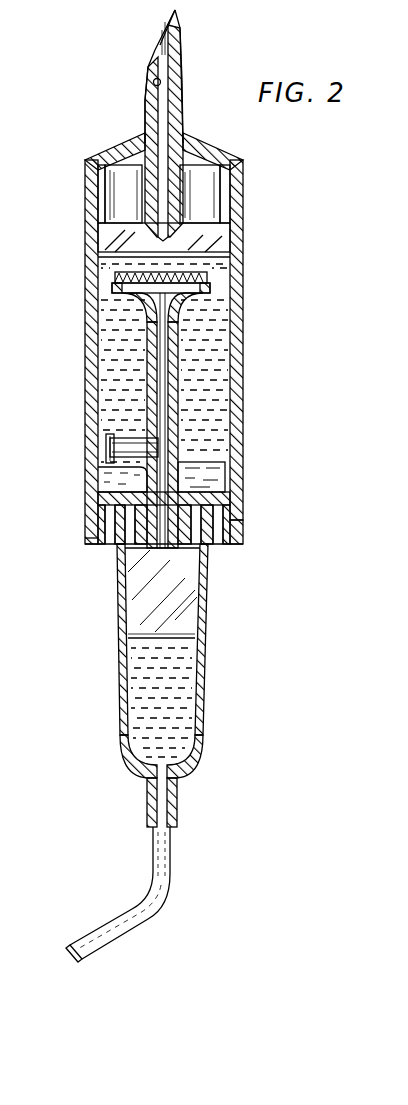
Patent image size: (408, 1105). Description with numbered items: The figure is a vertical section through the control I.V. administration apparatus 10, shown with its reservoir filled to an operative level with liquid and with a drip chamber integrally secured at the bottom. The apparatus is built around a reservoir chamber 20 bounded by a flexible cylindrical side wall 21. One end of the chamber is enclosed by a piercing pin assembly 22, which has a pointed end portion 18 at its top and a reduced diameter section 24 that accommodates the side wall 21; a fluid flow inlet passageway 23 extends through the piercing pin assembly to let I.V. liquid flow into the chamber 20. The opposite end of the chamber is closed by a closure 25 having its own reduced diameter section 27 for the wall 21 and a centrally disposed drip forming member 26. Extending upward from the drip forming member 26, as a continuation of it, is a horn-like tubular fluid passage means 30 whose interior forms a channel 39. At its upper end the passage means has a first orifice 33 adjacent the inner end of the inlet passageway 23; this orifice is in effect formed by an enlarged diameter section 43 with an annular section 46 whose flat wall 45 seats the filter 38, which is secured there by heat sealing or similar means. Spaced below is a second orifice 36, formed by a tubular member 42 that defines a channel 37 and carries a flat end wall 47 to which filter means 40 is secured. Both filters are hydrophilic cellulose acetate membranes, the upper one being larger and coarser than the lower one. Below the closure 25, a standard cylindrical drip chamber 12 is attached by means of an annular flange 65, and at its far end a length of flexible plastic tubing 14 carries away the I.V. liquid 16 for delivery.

The control I.V. administration apparatus 10 is at (148, 481).
The drip chamber 12 is at (138, 685).
The flexible plastic tubing 14 is at (122, 894).
The I.V. liquid 16 is at (194, 510).
The pointed end portion 18 is at (193, 22).
The reservoir chamber 20 is at (263, 340).
The flexible cylindrical side wall 21 is at (163, 352).
The piercing pin assembly 22 is at (186, 125).
The fluid flow inlet passageway 23 is at (122, 72).
The reduced diameter section 24 is at (187, 192).
The closure 25 is at (186, 553).
The drip forming member 26 is at (133, 591).
The reduced diameter section 27 is at (260, 527).
The fluid passage means 30 is at (217, 435).
The first orifice 33 is at (204, 306).
The second orifice 36 is at (86, 478).
The channel 37 is at (100, 417).
The filter 38 is at (192, 251).
The channel 39 is at (223, 420).
The filter means 40 is at (95, 448).
The tubular member 42 is at (126, 503).
The enlarged diameter section 43 is at (204, 278).
The flat wall 45 is at (117, 265).
The annular section 46 is at (74, 291).
The flat end wall 47 is at (70, 436).
The annular flange 65 is at (62, 550).